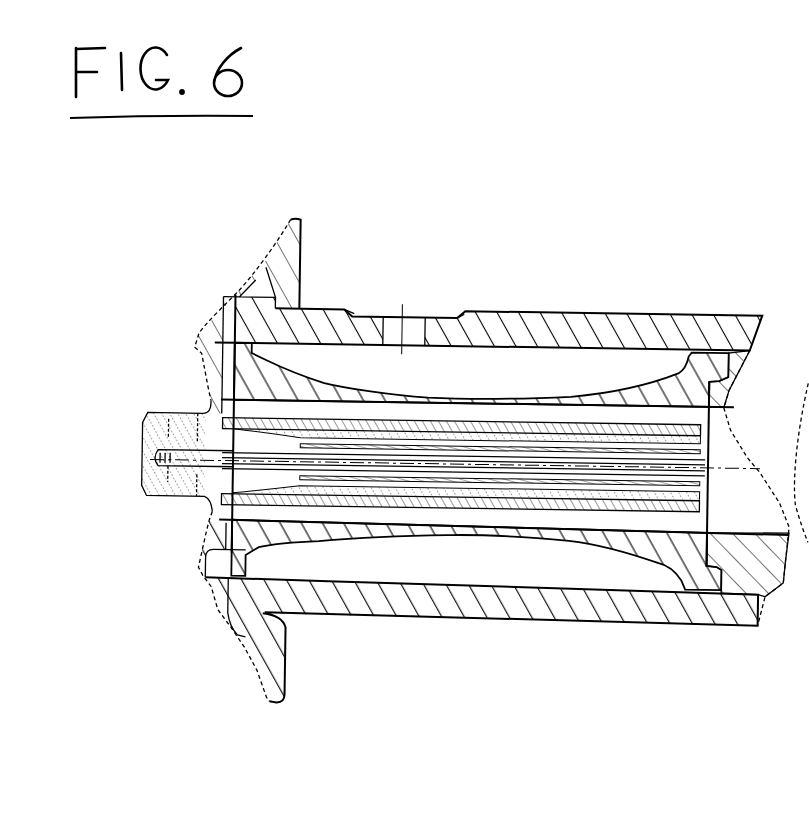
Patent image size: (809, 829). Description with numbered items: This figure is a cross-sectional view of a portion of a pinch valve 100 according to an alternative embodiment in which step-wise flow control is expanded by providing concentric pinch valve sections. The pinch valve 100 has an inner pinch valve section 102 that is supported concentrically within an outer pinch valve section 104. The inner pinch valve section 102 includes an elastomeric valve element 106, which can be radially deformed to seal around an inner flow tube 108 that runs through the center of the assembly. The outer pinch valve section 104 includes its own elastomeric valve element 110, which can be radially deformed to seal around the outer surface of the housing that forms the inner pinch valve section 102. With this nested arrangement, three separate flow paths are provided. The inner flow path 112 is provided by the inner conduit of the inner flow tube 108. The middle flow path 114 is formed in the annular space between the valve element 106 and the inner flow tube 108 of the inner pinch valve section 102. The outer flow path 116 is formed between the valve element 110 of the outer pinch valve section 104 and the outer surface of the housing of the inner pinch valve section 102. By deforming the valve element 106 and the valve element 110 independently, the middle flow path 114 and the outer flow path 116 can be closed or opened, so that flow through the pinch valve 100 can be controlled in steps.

The pinch valve 100 is at (174, 186).
The inner pinch valve section 102 is at (338, 403).
The outer pinch valve section 104 is at (607, 312).
The elastomeric valve element 106 is at (398, 483).
The inner flow tube 108 is at (470, 473).
The elastomeric valve element 110 is at (548, 528).
The inner flow path 112 is at (652, 477).
The middle flow path 114 is at (688, 450).
The outer flow path 116 is at (483, 420).